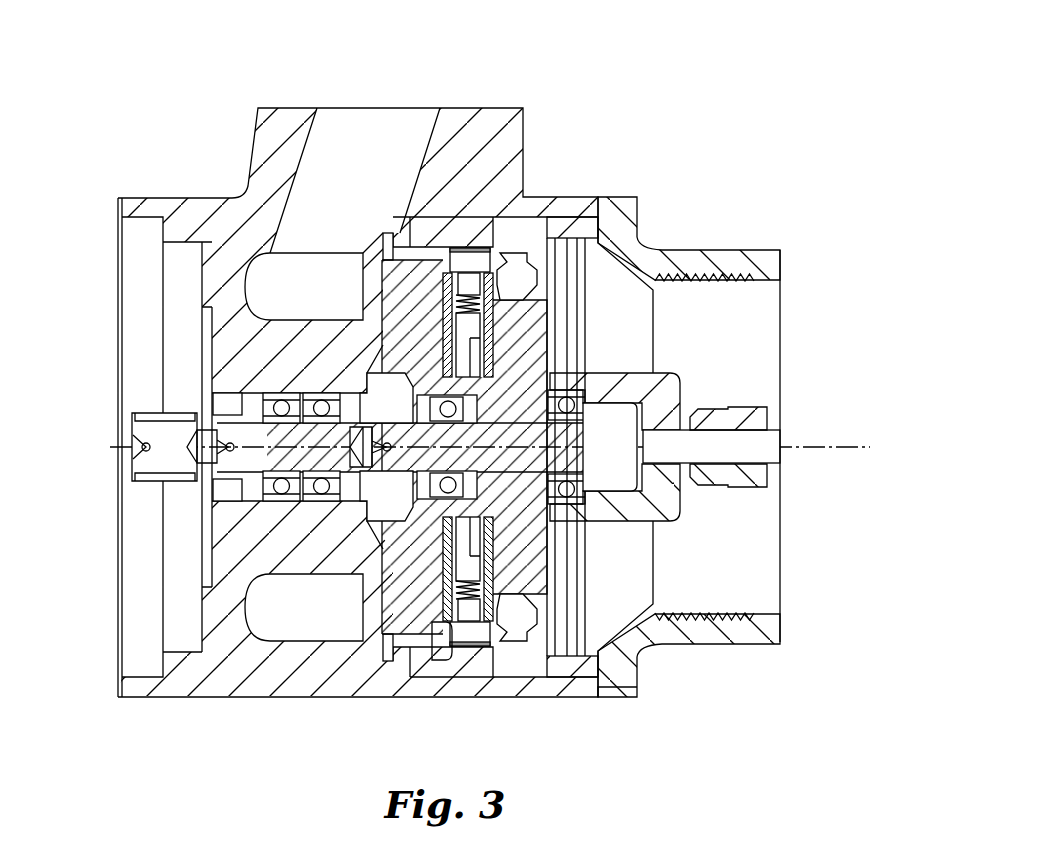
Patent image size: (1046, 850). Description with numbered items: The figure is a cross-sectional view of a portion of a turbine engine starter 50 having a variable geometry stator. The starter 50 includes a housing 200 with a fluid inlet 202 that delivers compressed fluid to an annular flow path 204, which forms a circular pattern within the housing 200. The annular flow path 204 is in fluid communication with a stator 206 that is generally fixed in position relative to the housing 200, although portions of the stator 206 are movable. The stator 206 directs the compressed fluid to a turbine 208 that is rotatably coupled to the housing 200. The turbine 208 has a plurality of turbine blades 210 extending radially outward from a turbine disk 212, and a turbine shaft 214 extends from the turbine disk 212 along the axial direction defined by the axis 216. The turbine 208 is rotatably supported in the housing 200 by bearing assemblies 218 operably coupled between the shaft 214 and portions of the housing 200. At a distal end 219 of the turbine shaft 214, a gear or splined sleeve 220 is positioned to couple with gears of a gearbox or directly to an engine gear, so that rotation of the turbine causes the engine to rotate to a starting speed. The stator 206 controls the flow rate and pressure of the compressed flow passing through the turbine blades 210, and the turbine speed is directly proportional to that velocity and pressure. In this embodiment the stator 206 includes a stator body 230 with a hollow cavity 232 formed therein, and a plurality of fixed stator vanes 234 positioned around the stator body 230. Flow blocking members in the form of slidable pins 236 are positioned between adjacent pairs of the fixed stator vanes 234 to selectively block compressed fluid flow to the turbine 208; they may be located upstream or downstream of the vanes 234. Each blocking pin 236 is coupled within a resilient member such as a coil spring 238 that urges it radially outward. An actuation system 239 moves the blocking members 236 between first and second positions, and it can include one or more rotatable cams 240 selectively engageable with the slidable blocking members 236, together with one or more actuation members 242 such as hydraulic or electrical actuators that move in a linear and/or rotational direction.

The turbine engine starter 50 is at (637, 66).
The housing 200 is at (512, 140).
The fluid inlet 202 is at (343, 160).
The annular flow path 204 is at (334, 299).
The stator 206 is at (507, 237).
The turbine 208 is at (600, 252).
The turbine blades 210 is at (553, 700).
The turbine disk 212 is at (600, 565).
The turbine shaft 214 is at (243, 560).
The axis 216 is at (836, 452).
The bearing assemblies 218 is at (273, 393).
The distal end 219 is at (157, 416).
The splined sleeve 220 is at (150, 482).
The stator body 230 is at (430, 663).
The hollow cavity 232 is at (503, 643).
The fixed stator vanes 234 is at (430, 212).
The slidable pins 236 is at (392, 233).
The coil spring 238 is at (440, 300).
The actuation system 239 is at (430, 630).
The rotatable cams 240 is at (558, 330).
The actuation members 242 is at (575, 345).